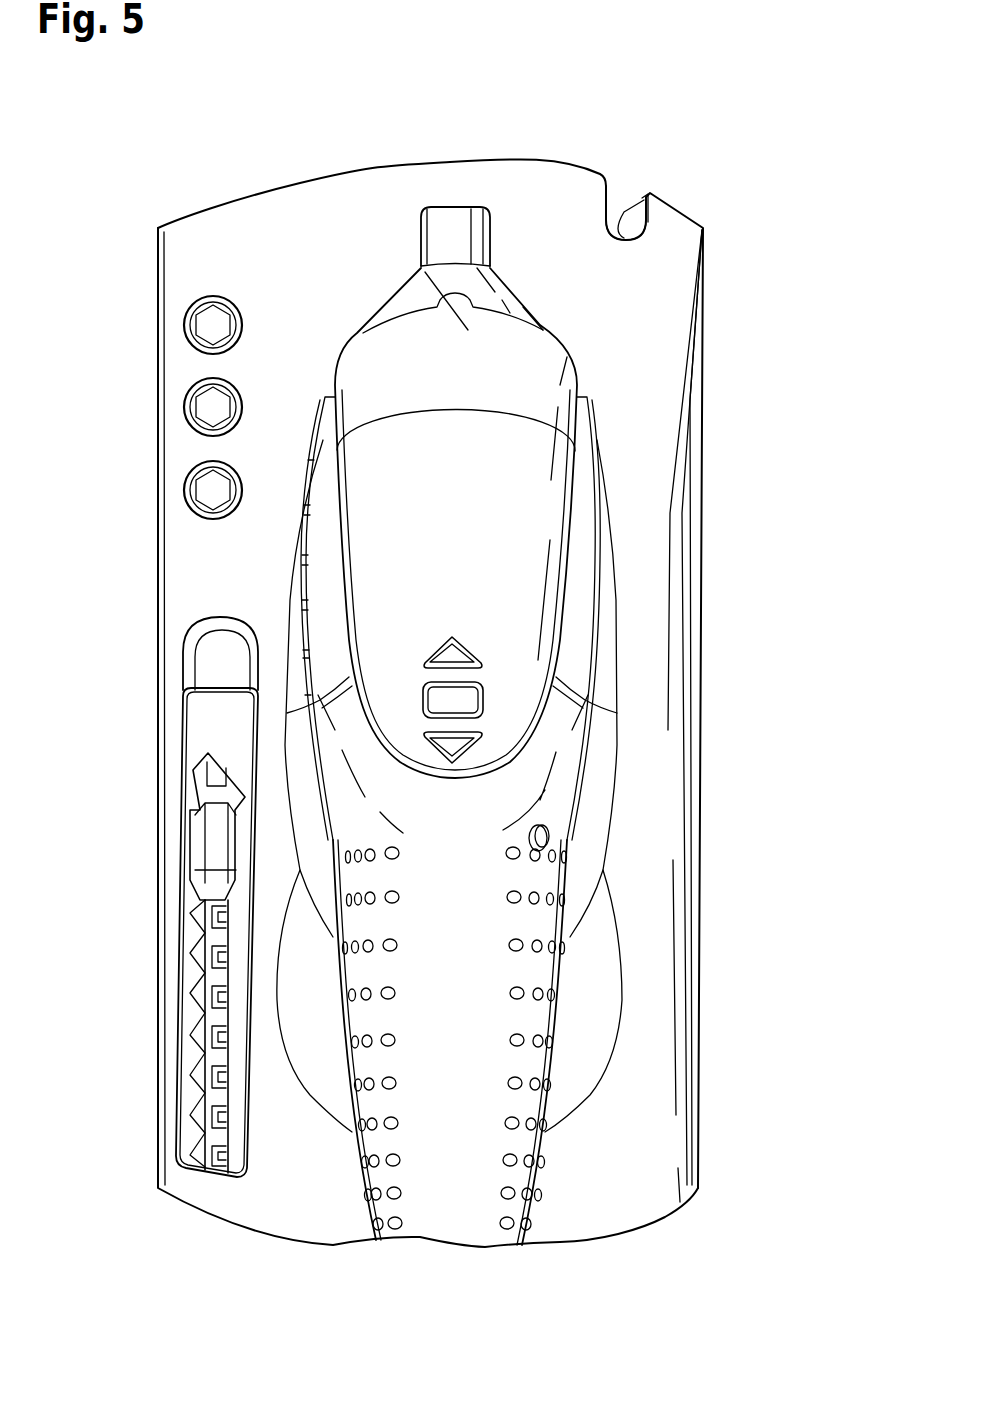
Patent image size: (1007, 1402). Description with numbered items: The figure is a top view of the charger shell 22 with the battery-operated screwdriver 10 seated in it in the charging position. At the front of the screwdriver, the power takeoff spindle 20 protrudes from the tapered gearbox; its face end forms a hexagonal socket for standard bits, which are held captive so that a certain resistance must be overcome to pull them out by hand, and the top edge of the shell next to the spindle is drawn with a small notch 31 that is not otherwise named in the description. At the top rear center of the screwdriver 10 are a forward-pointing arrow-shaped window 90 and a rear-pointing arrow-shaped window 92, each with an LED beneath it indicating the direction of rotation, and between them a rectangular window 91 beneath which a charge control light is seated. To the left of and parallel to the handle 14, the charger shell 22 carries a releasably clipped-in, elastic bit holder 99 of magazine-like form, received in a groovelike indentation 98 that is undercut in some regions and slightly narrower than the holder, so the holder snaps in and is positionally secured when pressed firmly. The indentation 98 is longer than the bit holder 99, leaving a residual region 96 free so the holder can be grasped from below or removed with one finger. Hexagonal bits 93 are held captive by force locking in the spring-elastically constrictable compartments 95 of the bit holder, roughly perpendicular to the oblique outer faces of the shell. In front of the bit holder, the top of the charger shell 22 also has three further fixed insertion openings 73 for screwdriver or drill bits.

The battery-operated screwdriver 10 is at (480, 512).
The handle 14 is at (467, 1070).
The power takeoff spindle 20 is at (445, 228).
The charger shell 22 is at (721, 155).
The notch 31 is at (623, 207).
The fixed insertion openings 73 is at (210, 332).
The forward-pointing arrow-shaped window 90 is at (460, 657).
The rectangular window 91 is at (458, 703).
The rear-pointing arrow-shaped window 92 is at (458, 746).
The hexagonal bit 93 is at (212, 848).
The insertion openings 95 is at (193, 915).
The residual region 96 is at (213, 637).
The groovelike indentation 98 is at (218, 683).
The bit holder 99 is at (208, 727).